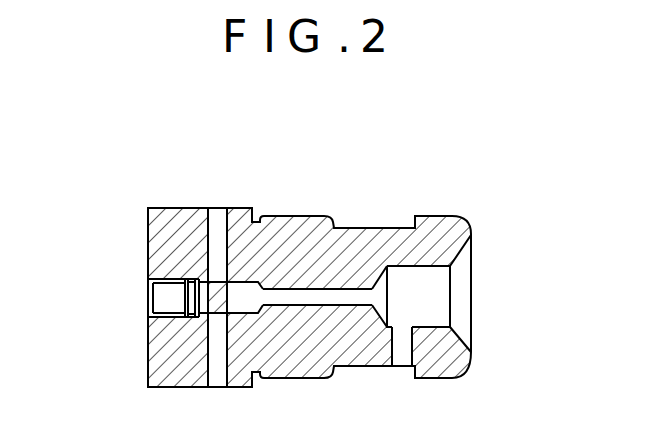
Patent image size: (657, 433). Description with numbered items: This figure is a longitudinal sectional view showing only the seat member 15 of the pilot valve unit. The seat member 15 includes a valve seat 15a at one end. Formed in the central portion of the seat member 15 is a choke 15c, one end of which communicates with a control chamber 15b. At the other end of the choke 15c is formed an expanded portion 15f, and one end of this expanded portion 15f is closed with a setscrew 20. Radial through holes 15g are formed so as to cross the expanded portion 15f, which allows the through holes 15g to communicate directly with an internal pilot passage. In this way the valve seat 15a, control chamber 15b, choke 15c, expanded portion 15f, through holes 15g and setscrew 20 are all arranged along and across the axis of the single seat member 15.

The seat member 15 is at (487, 216).
The valve seat 15a is at (448, 267).
The control chamber 15b is at (413, 277).
The choke 15c is at (307, 293).
The expanded portion 15f is at (237, 288).
The radial through holes 15g is at (217, 210).
The setscrew 20 is at (160, 298).